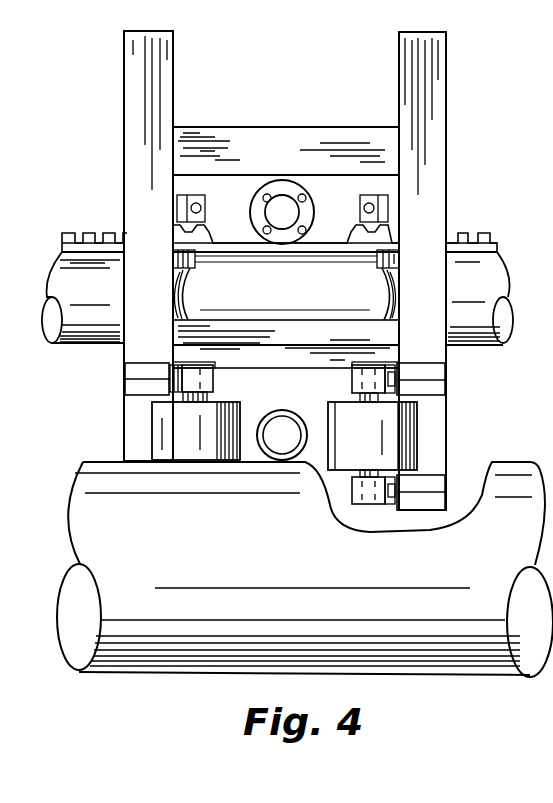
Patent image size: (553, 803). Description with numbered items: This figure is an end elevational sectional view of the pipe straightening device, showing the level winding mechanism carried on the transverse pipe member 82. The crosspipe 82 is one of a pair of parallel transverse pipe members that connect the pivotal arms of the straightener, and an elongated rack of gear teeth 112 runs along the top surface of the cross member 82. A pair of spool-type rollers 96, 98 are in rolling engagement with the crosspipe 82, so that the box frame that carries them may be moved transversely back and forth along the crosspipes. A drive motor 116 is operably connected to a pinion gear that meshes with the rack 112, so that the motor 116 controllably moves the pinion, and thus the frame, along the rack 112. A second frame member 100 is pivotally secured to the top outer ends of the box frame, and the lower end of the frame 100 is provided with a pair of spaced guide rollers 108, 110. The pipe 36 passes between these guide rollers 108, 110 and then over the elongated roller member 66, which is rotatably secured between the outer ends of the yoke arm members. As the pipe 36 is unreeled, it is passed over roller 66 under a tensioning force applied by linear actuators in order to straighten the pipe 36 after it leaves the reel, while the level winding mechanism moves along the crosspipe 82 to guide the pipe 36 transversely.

The pipe 36 is at (302, 460).
The elongated roller member 66 is at (197, 657).
The transverse pipe member 82 is at (110, 325).
The spool-type roller 96 is at (183, 292).
The spool-type roller 98 is at (390, 290).
The second frame member 100 is at (440, 120).
The guide roller 108 is at (404, 440).
The guide roller 110 is at (178, 437).
The rack of gear teeth 112 is at (93, 233).
The drive motor 116 is at (290, 205).